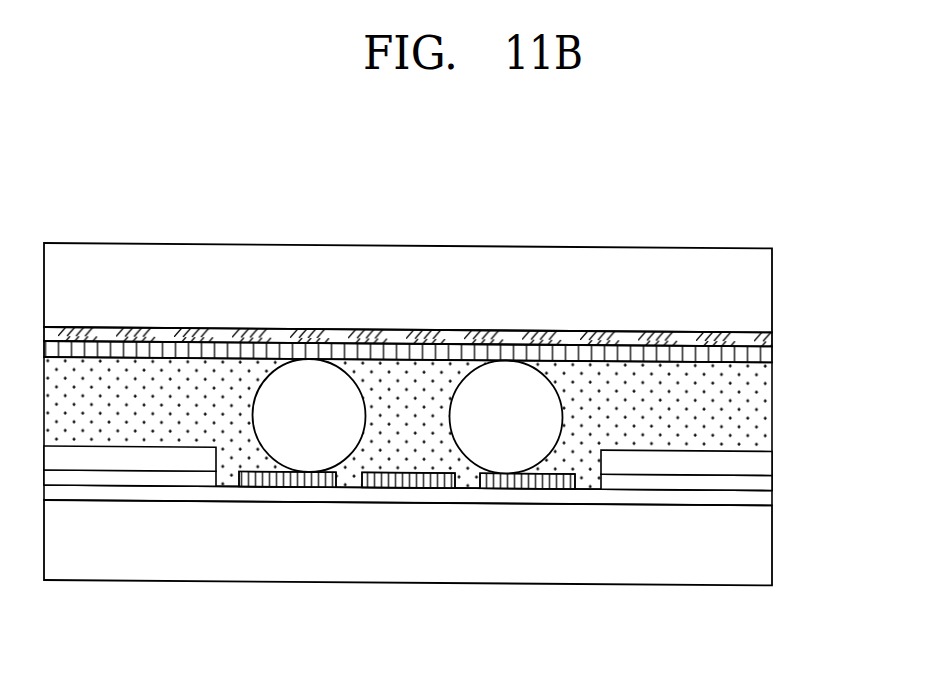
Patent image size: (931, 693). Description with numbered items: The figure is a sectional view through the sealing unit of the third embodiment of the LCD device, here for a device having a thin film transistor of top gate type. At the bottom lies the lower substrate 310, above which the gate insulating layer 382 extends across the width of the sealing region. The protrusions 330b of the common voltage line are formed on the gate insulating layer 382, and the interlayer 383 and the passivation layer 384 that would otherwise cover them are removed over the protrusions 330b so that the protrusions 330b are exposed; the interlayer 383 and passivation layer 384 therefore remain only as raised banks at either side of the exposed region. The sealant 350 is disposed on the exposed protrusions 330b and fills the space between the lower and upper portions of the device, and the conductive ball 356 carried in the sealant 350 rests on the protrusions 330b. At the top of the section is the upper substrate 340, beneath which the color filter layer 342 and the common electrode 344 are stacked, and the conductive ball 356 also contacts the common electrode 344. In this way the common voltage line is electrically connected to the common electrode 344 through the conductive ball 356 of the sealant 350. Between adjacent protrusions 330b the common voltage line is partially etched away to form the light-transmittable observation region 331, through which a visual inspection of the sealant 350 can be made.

The lower substrate 310 is at (772, 548).
The gate insulating layer 382 is at (772, 503).
The interlayer 383 is at (772, 479).
The passivation layer 384 is at (772, 455).
The protrusions 330b is at (300, 473).
The observation region 331 is at (468, 482).
The sealant 350 is at (772, 407).
The conductive ball 356 is at (504, 372).
The common electrode 344 is at (772, 358).
The color filter layer 342 is at (772, 336).
The upper substrate 340 is at (772, 273).